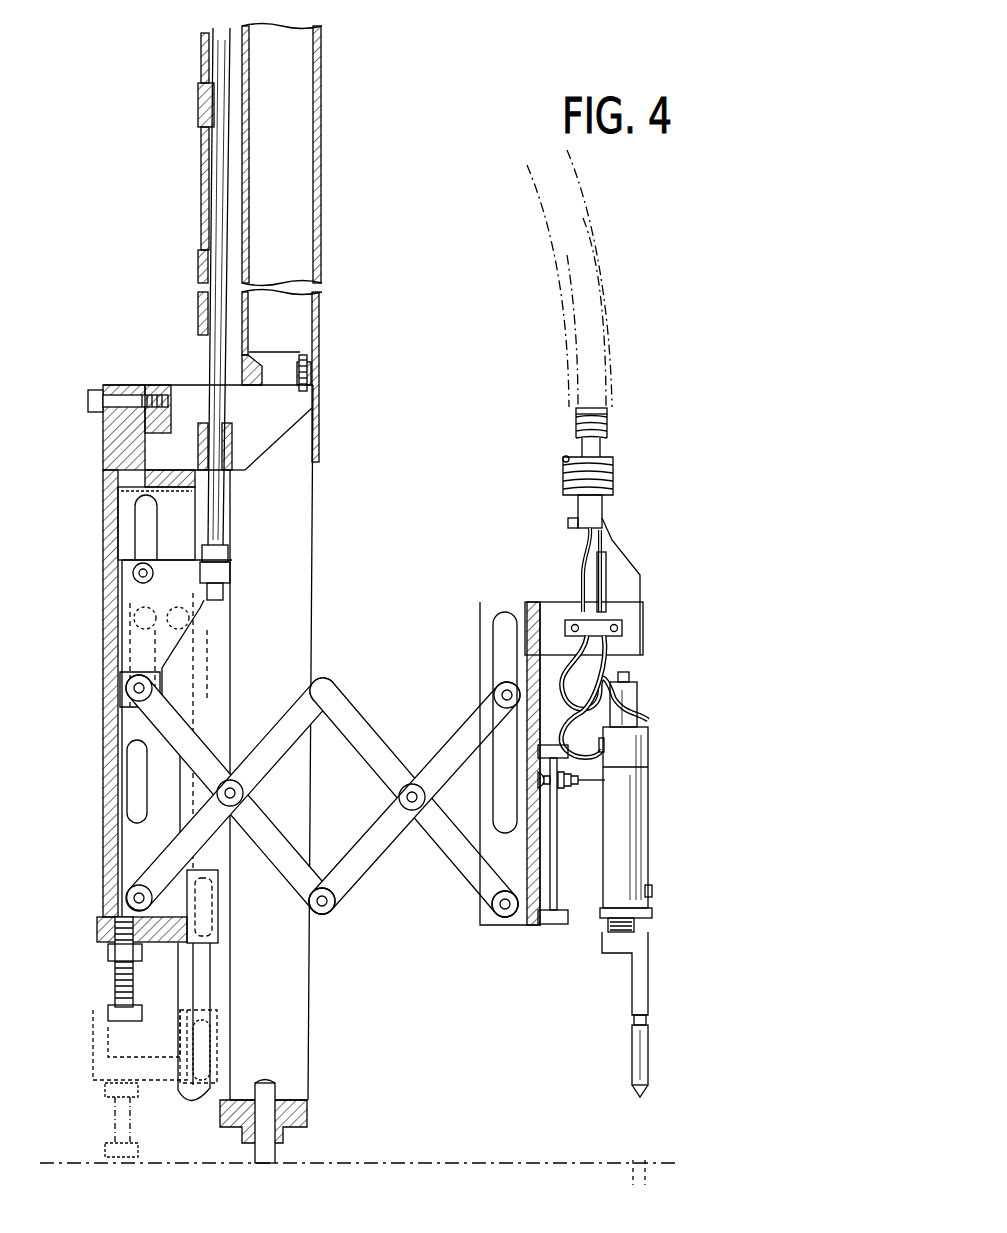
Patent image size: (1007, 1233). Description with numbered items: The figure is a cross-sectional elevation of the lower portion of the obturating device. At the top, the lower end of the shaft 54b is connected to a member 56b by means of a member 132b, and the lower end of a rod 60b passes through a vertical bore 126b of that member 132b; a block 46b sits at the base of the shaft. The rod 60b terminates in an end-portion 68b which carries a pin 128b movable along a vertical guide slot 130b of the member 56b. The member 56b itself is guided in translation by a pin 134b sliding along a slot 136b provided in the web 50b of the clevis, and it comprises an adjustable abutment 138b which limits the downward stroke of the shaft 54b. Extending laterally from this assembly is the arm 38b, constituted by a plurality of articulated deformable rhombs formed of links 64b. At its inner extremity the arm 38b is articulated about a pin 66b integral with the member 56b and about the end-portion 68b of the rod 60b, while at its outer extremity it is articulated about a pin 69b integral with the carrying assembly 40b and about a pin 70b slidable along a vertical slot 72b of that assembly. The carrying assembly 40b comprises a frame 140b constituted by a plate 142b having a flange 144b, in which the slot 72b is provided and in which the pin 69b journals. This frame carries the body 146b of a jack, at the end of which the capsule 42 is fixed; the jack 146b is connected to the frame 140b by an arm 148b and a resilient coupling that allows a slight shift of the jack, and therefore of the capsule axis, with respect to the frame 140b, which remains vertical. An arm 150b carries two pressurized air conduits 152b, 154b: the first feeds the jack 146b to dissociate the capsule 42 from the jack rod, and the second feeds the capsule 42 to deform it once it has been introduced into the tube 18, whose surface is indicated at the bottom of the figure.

The tube 18 is at (635, 1160).
The arm 38b is at (343, 907).
The carrying assembly 40b is at (668, 805).
The capsule 42 is at (642, 1039).
The tube end block 46b is at (318, 342).
The web 50b is at (288, 512).
The shaft 54b is at (324, 142).
The member 56b is at (107, 845).
The rod 60b is at (220, 156).
The links 64b is at (325, 698).
The pin 66b is at (135, 898).
The end-portion 68b is at (142, 600).
The pin 69b is at (494, 915).
The pin 70b is at (505, 695).
The vertical slot 72b is at (500, 620).
The vertical bore 126b is at (209, 445).
The pin 128b is at (142, 570).
The vertical guide slot 130b is at (140, 780).
The member 132b is at (147, 385).
The pin 134b is at (217, 923).
The slot 136b is at (232, 1120).
The adjustable abutment 138b is at (112, 988).
The frame 140b is at (483, 660).
The plate 142b is at (535, 920).
The flange 144b is at (494, 841).
The jack body 146b is at (623, 863).
The arm 148b is at (577, 905).
The arm 150b is at (550, 609).
The pressurized air conduit 152b is at (590, 526).
The pressurized air conduit 154b is at (605, 633).